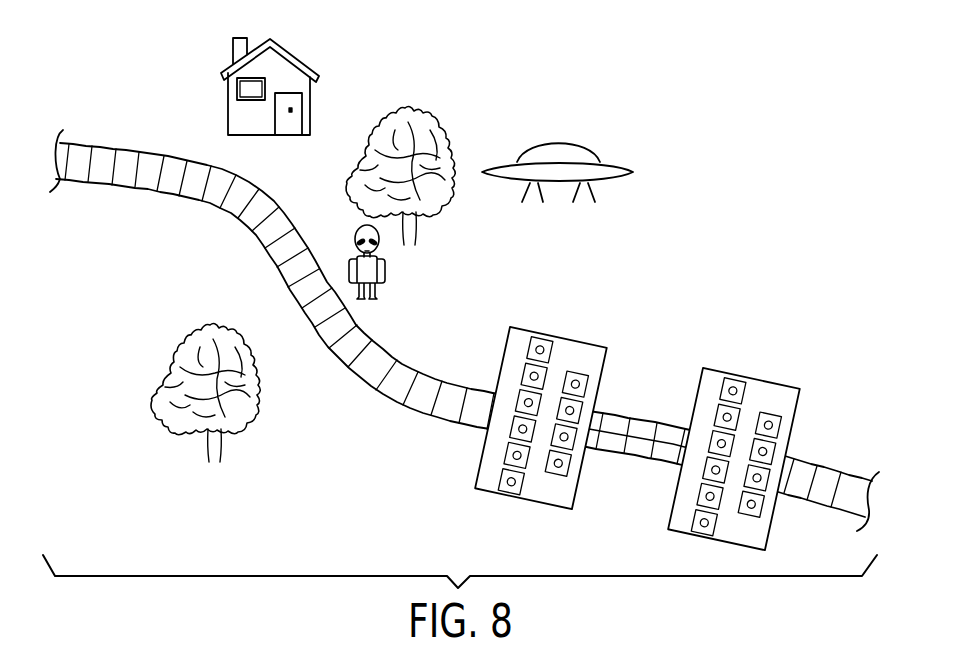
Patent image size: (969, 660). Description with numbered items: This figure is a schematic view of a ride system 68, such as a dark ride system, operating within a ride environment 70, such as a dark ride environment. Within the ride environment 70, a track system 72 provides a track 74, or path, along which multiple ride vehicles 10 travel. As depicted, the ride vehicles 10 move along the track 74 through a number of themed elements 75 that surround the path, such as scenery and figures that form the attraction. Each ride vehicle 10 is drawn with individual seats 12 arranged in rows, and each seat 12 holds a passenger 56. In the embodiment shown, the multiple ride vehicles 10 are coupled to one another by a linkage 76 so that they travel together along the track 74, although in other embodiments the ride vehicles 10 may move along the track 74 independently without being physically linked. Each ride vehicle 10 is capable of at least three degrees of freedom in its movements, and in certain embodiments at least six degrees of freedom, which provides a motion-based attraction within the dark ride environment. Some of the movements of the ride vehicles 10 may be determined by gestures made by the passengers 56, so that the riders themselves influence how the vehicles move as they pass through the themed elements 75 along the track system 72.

The ride vehicle 10 is at (662, 410).
The pixel cell 12 is at (525, 335).
The passenger 56 is at (575, 383).
The ride system 68 is at (452, 88).
The ride environment 70 is at (544, 179).
The track system 72 is at (464, 330).
The track 74 is at (385, 394).
The themed element 75 is at (608, 162).
The linkage 76 is at (639, 441).